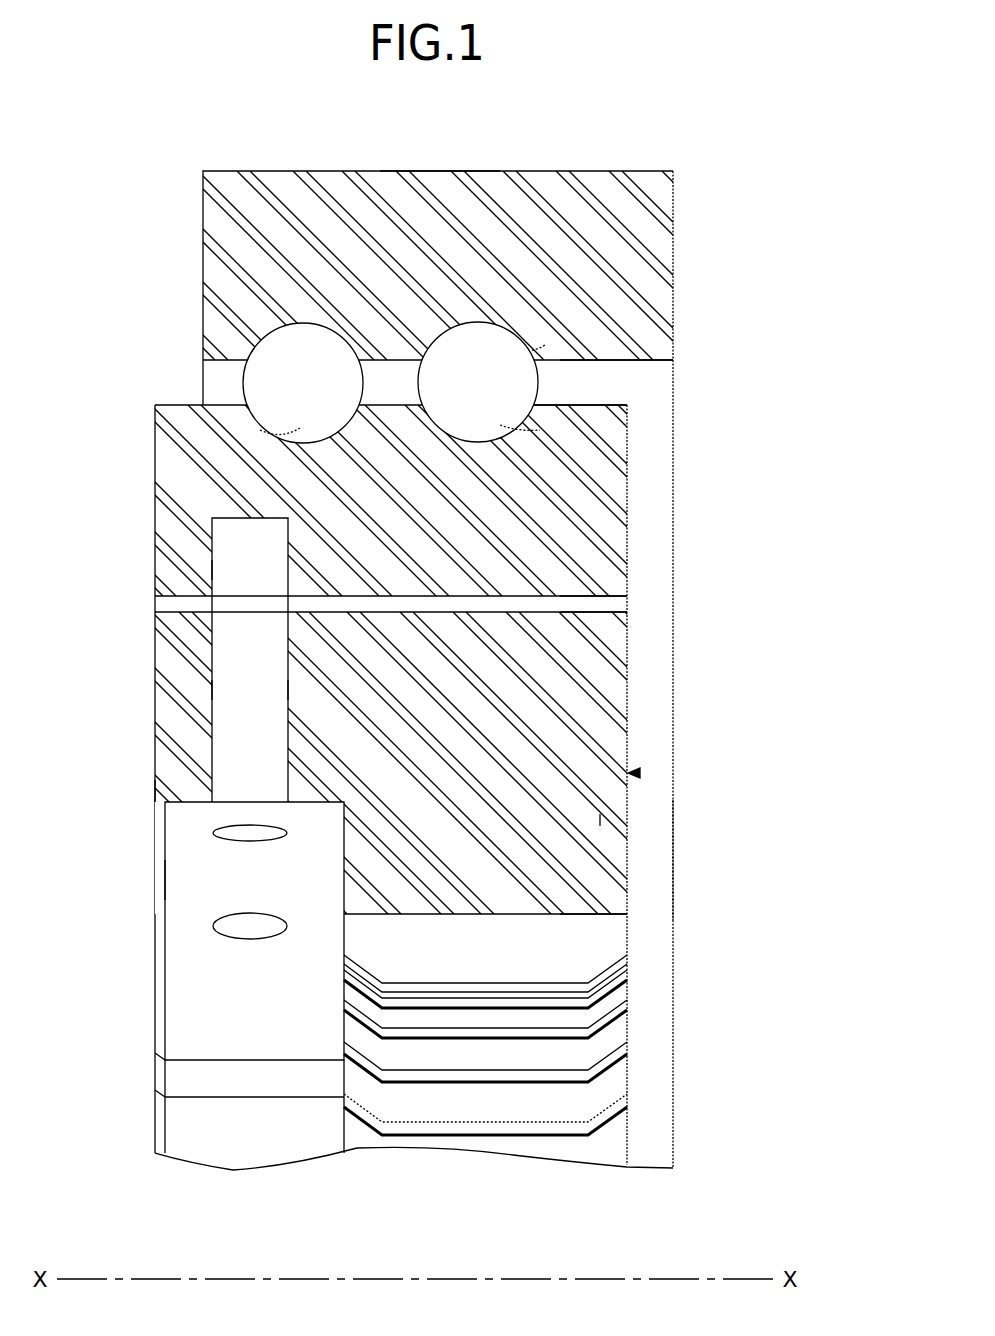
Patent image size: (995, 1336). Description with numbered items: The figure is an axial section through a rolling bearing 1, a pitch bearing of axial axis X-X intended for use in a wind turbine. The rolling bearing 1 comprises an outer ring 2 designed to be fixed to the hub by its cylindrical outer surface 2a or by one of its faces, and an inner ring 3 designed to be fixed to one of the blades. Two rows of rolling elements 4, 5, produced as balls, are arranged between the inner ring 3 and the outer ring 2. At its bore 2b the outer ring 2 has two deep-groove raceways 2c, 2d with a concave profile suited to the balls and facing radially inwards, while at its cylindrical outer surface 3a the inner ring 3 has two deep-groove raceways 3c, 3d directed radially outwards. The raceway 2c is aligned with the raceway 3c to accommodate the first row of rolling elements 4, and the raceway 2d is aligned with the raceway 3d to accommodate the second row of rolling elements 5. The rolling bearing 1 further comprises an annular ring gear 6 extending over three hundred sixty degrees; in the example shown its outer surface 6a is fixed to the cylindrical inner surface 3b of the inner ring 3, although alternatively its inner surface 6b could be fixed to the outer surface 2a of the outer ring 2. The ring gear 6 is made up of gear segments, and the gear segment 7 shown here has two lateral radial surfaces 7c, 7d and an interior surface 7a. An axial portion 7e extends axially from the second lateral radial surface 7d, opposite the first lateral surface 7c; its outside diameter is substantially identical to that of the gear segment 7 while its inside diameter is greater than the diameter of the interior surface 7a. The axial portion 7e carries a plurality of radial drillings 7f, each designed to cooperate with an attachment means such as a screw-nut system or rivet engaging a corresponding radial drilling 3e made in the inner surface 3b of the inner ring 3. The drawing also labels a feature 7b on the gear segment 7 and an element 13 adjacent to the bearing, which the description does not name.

The rolling bearing 1 is at (660, 132).
The outer ring 2 is at (549, 188).
The cylindrical outer surface 2a is at (443, 171).
The bore 2b is at (615, 364).
The deep-groove raceway 2c is at (270, 335).
The deep-groove raceway 2d is at (545, 345).
The inner ring 3 is at (562, 515).
The cylindrical outer surface 3a is at (582, 405).
The cylindrical inner surface 3b is at (596, 598).
The deep-groove raceway 3c is at (296, 440).
The deep-groove raceway 3d is at (545, 432).
The radial drilling 3e is at (242, 576).
The first row of rolling elements 4 is at (295, 396).
The second row of rolling elements 5 is at (470, 395).
The ring gear 6 is at (632, 773).
The outer surface of the ring gear 6a is at (590, 614).
The inner surface of the ring gear 6b is at (596, 936).
The gear segment 7 is at (158, 733).
The interior surface 7a is at (592, 1098).
The shaft groove bottom 7b is at (548, 1077).
The first lateral radial surface 7c is at (588, 860).
The second lateral radial surface 7d is at (344, 858).
The axial portion 7e is at (160, 793).
The radial drillings 7f is at (290, 686).
The housing 13 is at (600, 820).